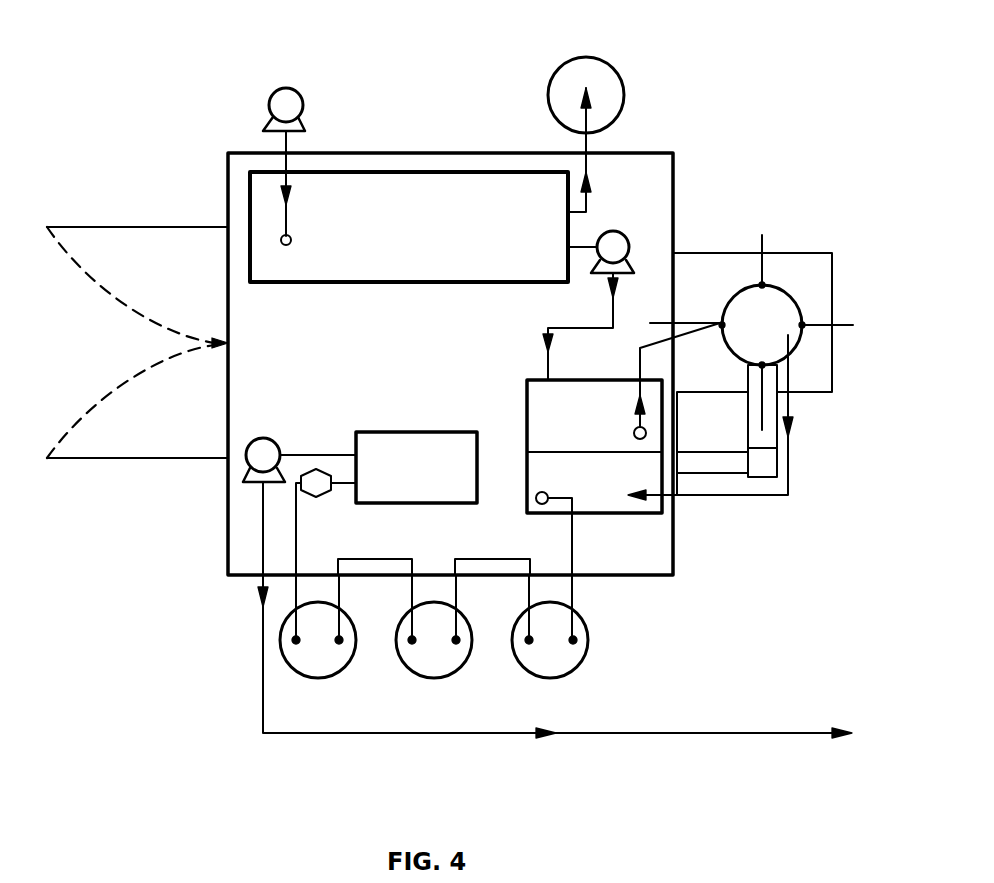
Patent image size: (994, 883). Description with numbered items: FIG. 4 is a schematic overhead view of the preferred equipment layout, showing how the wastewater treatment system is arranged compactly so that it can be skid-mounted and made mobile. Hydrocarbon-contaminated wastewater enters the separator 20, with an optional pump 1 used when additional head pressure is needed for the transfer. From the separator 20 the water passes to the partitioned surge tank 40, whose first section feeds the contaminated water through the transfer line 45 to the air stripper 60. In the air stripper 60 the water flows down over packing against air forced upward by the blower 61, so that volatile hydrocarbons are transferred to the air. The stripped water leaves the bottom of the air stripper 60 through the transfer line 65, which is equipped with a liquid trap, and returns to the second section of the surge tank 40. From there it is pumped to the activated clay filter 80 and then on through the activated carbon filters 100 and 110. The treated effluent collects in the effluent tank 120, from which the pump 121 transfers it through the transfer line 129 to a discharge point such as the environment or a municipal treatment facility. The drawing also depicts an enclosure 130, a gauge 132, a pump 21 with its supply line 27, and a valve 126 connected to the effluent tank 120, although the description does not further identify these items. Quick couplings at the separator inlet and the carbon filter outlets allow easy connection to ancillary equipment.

The pump 1 is at (281, 88).
The separator 20 is at (383, 284).
The second pump 21 is at (610, 230).
The supply line 27 is at (565, 328).
The surge tank 40 is at (527, 396).
The transfer line 45 is at (637, 356).
The air stripper 60 is at (768, 290).
The blower 61 is at (748, 432).
The transfer line 65 is at (735, 495).
The activated clay filter 80 is at (578, 666).
The activated carbon filter 100 is at (460, 666).
The activated carbon filter 110 is at (343, 666).
The effluent tank 120 is at (391, 432).
The pump 121 is at (266, 438).
The valve 126 is at (318, 498).
The transfer line 129 is at (325, 733).
The housing 130 is at (228, 178).
The gauge 132 is at (598, 62).